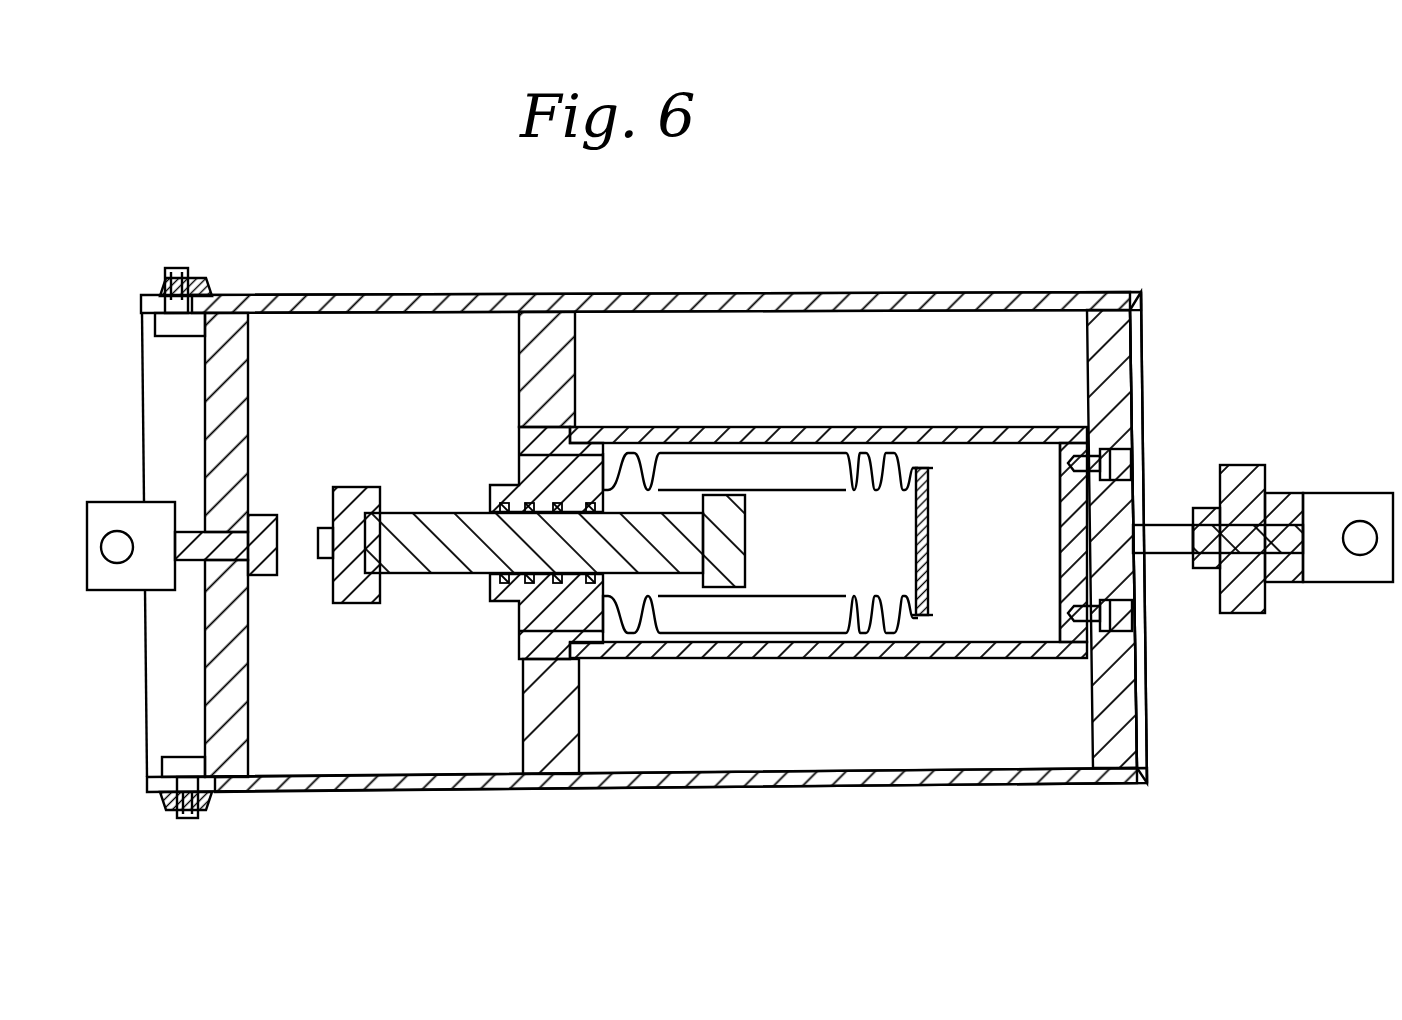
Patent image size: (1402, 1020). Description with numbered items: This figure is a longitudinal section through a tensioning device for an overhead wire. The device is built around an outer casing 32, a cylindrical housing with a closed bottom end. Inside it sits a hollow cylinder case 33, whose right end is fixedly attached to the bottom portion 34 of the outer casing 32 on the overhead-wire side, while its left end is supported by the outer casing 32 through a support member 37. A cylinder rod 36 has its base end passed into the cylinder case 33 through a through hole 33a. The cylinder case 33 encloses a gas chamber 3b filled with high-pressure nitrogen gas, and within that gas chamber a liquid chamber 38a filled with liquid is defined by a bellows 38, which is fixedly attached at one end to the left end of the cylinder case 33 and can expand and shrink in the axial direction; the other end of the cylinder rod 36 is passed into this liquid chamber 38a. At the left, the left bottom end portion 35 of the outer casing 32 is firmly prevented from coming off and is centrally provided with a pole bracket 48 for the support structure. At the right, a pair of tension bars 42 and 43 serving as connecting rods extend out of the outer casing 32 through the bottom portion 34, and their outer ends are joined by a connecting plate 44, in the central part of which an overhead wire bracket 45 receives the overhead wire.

The outer casing 32 is at (605, 294).
The left bottom end portion 35 is at (238, 372).
The pole bracket 48 is at (105, 502).
The support member 37 is at (565, 372).
The cylinder case 33 is at (823, 427).
The through hole 33a is at (500, 576).
The cylinder rod 36 is at (427, 523).
The bellows 38 is at (930, 525).
The liquid chamber 38a is at (883, 545).
The chamber 3b is at (1018, 506).
The bottom portion 34 is at (1134, 730).
The tension bar 42 is at (1165, 525).
The tension bar 43 is at (1100, 615).
The connecting plate 44 is at (1243, 613).
The overhead wire bracket 45 is at (1300, 493).